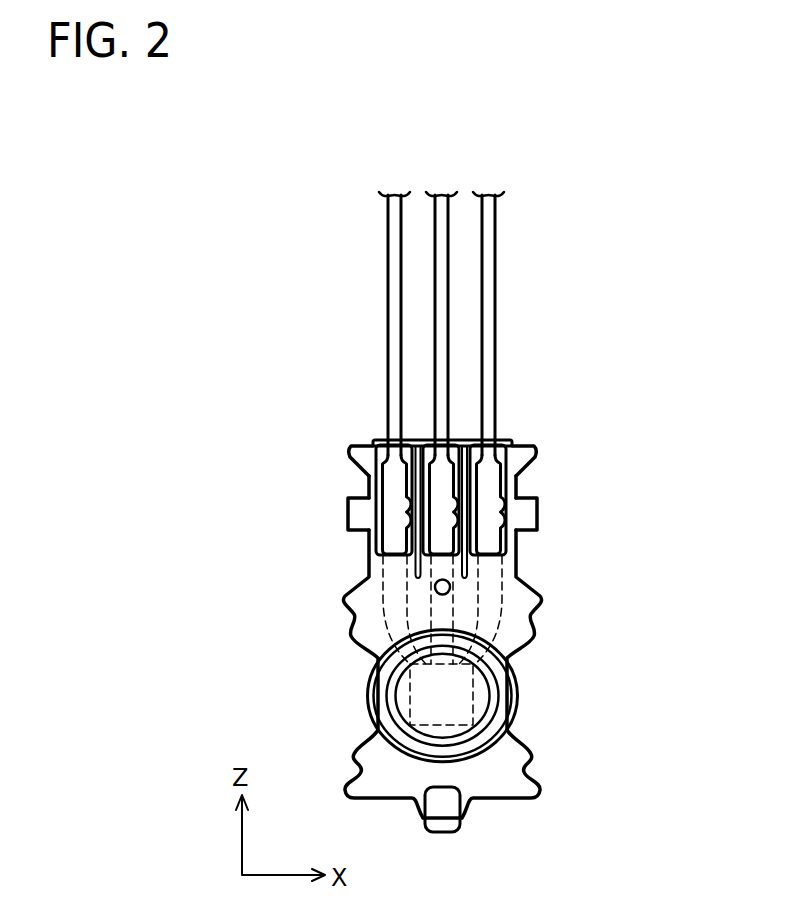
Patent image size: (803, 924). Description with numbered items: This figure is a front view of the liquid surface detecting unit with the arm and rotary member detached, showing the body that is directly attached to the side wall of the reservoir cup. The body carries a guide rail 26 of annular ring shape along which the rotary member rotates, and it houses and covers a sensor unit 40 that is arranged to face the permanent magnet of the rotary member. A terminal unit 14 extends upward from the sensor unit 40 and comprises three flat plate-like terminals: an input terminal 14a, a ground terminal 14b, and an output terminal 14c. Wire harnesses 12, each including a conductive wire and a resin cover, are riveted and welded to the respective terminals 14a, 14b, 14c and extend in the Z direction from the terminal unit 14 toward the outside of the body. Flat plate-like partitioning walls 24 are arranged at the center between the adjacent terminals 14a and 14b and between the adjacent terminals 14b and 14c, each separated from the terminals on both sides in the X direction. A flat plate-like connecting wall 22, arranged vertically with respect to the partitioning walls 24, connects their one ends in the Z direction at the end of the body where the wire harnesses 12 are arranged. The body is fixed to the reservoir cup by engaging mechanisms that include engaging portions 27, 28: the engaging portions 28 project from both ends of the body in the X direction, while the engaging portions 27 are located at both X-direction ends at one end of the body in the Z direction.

The wire harnesses 12 is at (488, 212).
The connecting wall 22 is at (383, 442).
The engaging portions 27 is at (362, 458).
The engaging portions 28 is at (357, 512).
The partitioning walls 24 is at (463, 563).
The terminal unit 14 is at (543, 556).
The input terminal 14a is at (395, 542).
The ground terminal 14b is at (442, 533).
The output terminal 14c is at (495, 528).
The sensor unit 40 is at (410, 690).
The guide rail 26 is at (500, 712).